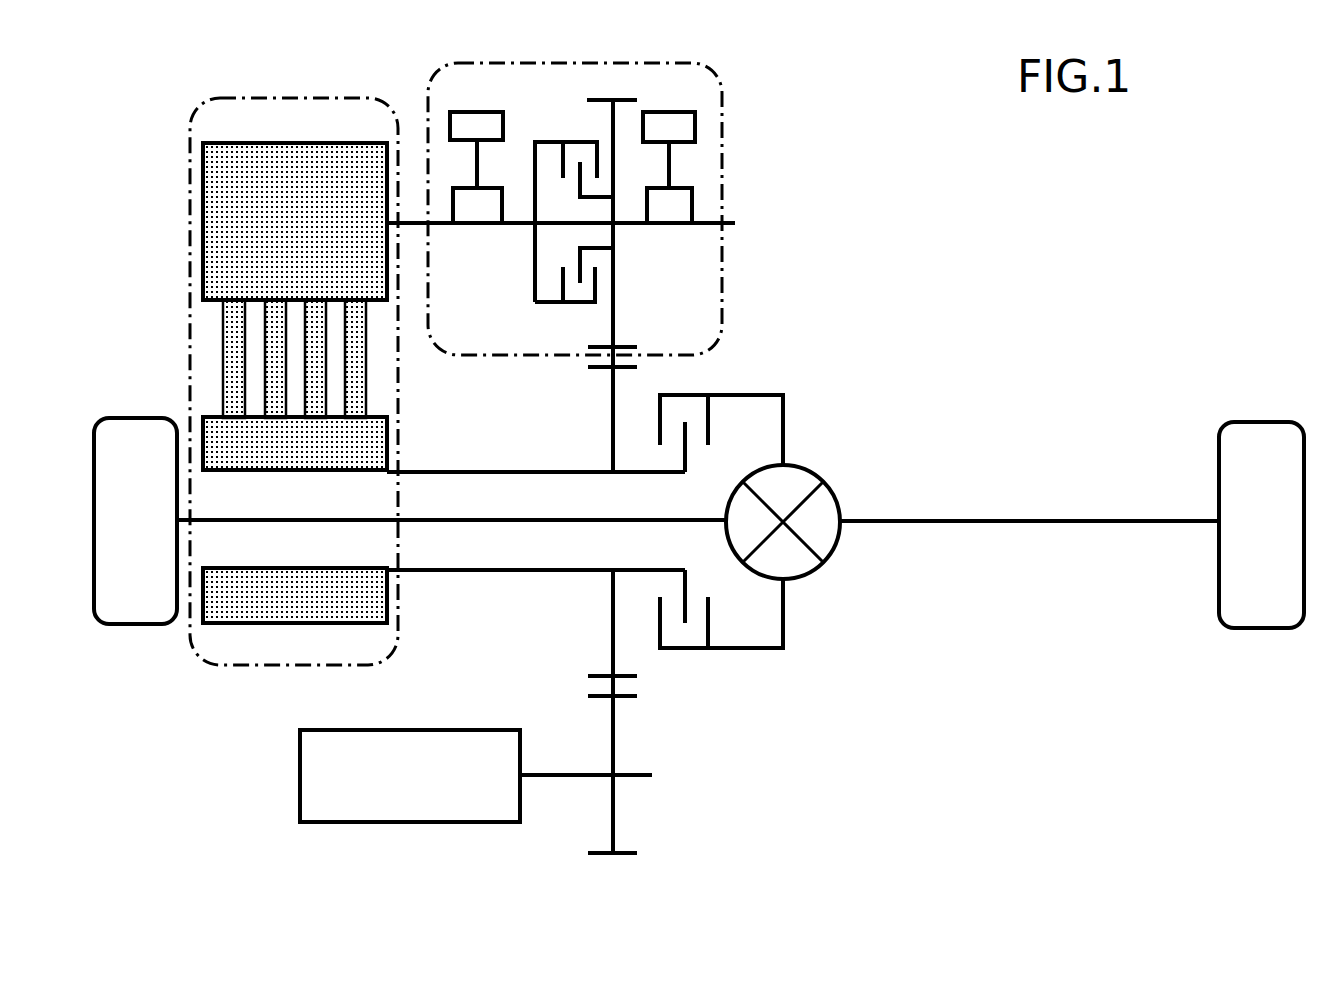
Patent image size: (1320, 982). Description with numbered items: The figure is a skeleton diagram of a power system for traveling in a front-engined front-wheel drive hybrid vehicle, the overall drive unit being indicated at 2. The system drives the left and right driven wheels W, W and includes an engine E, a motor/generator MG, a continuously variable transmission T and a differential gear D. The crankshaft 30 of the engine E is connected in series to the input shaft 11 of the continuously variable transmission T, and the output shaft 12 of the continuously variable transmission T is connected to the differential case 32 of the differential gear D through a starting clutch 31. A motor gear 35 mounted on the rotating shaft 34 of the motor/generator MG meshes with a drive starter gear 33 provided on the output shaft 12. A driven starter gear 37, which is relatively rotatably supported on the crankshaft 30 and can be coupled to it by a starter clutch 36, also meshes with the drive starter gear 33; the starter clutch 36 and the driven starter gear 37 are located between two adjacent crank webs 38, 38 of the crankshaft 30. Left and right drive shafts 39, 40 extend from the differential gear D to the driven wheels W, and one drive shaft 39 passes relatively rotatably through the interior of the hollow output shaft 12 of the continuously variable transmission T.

The drive unit 2 is at (178, 240).
The continuously variable transmission T is at (158, 372).
The engine E is at (724, 120).
The driven wheels W is at (125, 625).
The differential gear D is at (828, 562).
The motor/generator MG is at (410, 776).
The input shaft 11 is at (408, 228).
The output shaft 12 is at (455, 470).
The crankshaft 30 is at (630, 240).
The starting clutch 31 is at (743, 372).
The differential case 32 is at (809, 526).
The drive starter gear 33 is at (590, 362).
The rotating shaft 34 is at (563, 778).
The motor gear 35 is at (590, 695).
The starter clutch 36 is at (556, 128).
The driven starter gear 37 is at (640, 352).
The crank webs 38 is at (503, 201).
The drive shaft 39 is at (335, 518).
The drive shaft 40 is at (955, 520).